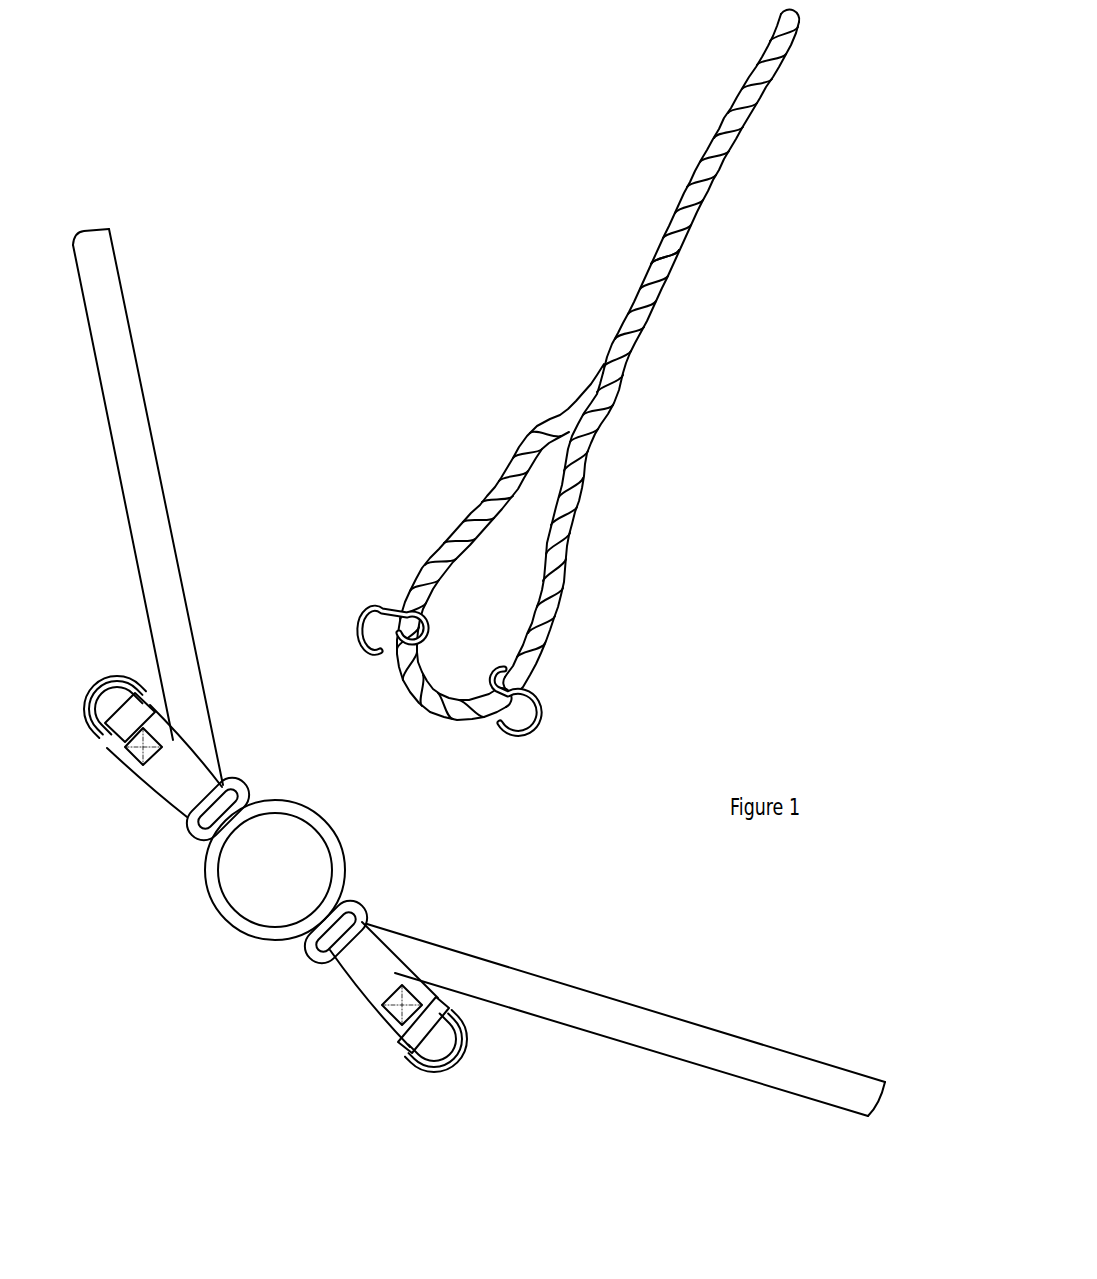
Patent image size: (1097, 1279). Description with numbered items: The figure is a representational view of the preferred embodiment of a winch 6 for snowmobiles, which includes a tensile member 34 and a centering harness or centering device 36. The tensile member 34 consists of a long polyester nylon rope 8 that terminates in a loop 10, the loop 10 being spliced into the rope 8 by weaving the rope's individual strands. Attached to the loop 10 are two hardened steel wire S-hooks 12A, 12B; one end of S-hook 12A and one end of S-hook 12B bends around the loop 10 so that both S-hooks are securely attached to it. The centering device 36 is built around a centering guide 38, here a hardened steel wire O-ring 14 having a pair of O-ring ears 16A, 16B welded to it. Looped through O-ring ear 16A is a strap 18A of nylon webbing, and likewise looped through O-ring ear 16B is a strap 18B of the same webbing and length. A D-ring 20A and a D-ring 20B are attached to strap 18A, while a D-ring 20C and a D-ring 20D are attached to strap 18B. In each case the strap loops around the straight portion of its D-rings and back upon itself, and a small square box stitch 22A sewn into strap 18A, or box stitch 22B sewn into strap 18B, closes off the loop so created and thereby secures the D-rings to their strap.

The winch 6 is at (373, 152).
The rope 8 is at (737, 126).
The loop 10 is at (560, 562).
The S-hook 12A is at (537, 707).
The S-hook 12B is at (363, 615).
The O-ring 14 is at (330, 829).
The O-ring ear 16A is at (360, 912).
The O-ring ear 16B is at (196, 830).
The strap 18A is at (775, 1067).
The strap 18B is at (105, 272).
The D-ring 20A is at (398, 1043).
The D-ring 20B is at (460, 1053).
The D-ring 20C is at (102, 742).
The D-ring 20D is at (98, 688).
The box stitch 22A is at (396, 1012).
The box stitch 22B is at (137, 757).
The tensile member 34 is at (680, 304).
The centering harness 36 is at (160, 410).
The centering guide 38 is at (208, 933).